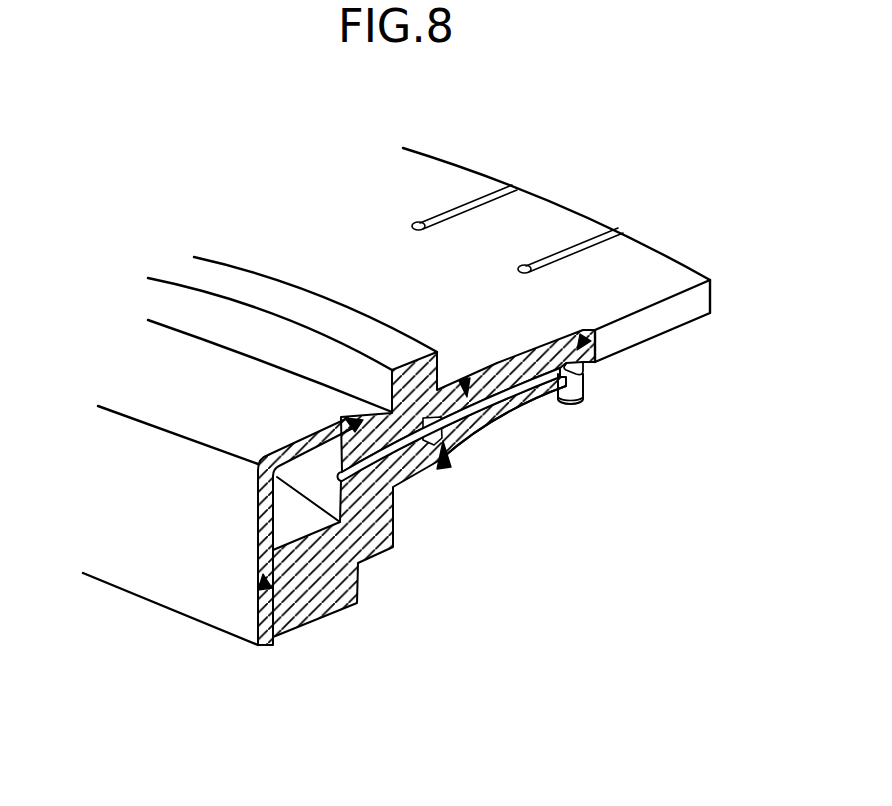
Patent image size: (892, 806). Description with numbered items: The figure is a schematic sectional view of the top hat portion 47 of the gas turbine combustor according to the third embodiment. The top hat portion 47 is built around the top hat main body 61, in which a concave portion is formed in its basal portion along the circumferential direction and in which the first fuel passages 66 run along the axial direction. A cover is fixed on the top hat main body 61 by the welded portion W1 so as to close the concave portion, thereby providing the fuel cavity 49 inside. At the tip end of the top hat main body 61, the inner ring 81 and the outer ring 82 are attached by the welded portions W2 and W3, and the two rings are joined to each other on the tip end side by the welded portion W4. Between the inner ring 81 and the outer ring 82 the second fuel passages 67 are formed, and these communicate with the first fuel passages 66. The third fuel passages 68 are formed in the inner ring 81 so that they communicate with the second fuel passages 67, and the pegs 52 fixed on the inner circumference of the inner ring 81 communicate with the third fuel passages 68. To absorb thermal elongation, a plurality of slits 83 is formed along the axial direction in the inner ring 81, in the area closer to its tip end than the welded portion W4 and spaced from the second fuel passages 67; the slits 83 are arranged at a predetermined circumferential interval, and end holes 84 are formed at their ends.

The top hat portion 47 is at (146, 561).
The fuel cavity 49 is at (297, 513).
The pegs 52 is at (572, 398).
The top hat main body 61 is at (330, 597).
The first fuel passages 66 is at (393, 457).
The second fuel passages 67 is at (566, 368).
The third fuel passages 68 is at (585, 366).
The inner ring 81 is at (482, 418).
The outer ring 82 is at (393, 168).
The slits 83 is at (483, 190).
The end holes 84 is at (420, 222).
The welded portion W1 is at (266, 590).
The welded portion W2 is at (444, 466).
The welded portion W3 is at (465, 385).
The welded portion W4 is at (582, 340).